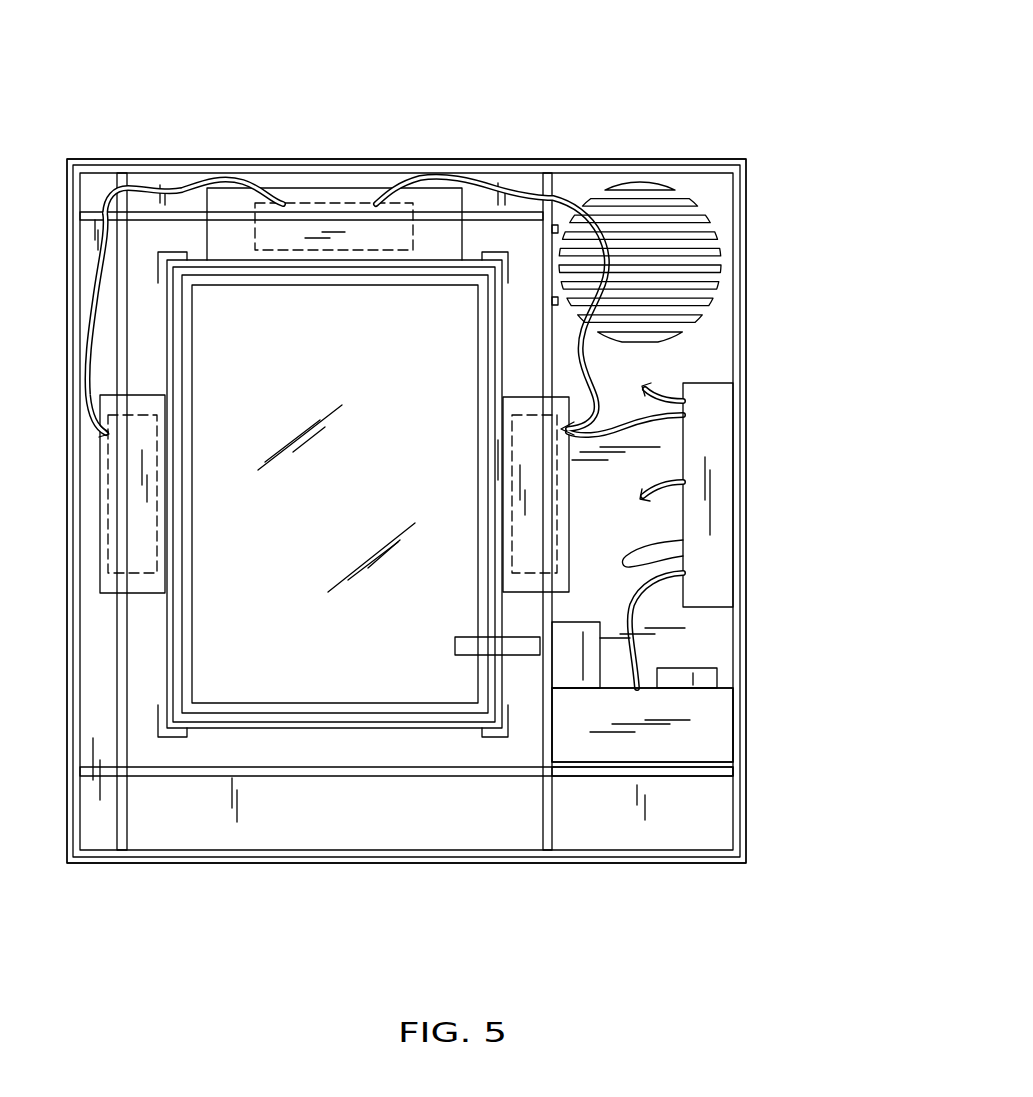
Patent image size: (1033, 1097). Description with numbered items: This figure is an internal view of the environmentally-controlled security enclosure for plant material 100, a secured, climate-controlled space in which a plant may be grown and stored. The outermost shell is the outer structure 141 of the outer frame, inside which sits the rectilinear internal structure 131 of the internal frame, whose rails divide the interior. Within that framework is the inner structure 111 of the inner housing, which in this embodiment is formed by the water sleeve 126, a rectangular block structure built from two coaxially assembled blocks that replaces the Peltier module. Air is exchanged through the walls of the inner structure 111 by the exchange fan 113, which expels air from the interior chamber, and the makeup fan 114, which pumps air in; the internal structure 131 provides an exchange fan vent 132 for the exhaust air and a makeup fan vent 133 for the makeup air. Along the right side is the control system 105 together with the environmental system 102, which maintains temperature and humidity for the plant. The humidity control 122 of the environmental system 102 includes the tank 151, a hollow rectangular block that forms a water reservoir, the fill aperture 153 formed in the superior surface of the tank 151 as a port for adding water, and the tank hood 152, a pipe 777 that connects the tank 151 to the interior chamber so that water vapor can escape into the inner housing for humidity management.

The environmentally-controlled security enclosure for plant material 100 is at (140, 60).
The outer structure 141 is at (602, 159).
The exchange fan 113 is at (108, 523).
The exchange fan vent 132 is at (120, 580).
The inner structure 111 is at (305, 287).
The water sleeve 126 is at (178, 442).
The makeup fan vent 133 is at (552, 577).
The makeup fan 114 is at (570, 512).
The pipe 777 is at (467, 637).
The control system 105 is at (720, 470).
The tank hood 152 is at (570, 640).
The fill aperture 153 is at (707, 680).
The humidity control 122 is at (703, 738).
The internal structure 131 is at (677, 790).
The environmental system 102 is at (716, 711).
The tank 151 is at (597, 745).